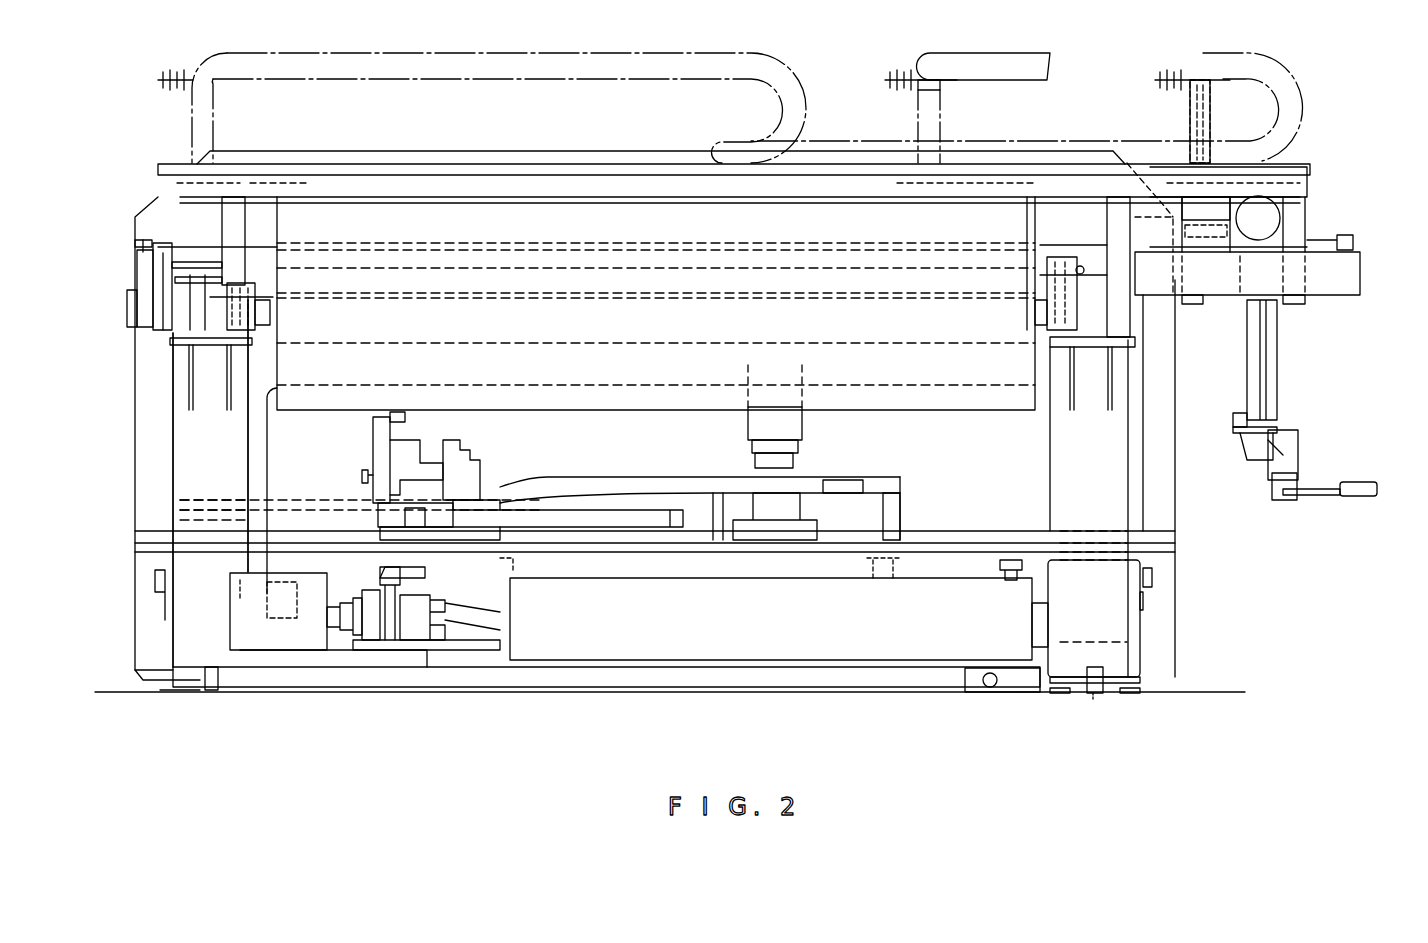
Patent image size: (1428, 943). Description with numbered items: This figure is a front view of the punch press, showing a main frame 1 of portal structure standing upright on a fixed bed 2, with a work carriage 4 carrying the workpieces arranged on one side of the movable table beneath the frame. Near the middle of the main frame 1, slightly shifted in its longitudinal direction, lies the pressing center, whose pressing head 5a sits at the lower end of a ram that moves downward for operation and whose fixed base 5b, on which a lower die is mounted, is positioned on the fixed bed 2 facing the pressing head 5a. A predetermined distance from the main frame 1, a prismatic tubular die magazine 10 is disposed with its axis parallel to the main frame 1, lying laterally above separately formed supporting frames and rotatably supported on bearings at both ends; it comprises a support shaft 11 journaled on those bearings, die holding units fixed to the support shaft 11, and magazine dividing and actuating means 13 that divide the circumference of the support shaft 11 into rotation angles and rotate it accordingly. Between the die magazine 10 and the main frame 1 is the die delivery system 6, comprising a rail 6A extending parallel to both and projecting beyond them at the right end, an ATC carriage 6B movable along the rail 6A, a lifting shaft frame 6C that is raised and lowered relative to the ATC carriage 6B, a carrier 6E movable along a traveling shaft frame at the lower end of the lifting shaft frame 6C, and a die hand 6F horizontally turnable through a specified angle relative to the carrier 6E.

The main frame 1 is at (1167, 500).
The fixed bed 2 is at (1167, 623).
The work carriage 4 is at (417, 457).
The pressing head 5a is at (757, 458).
The fixed base 5b is at (785, 507).
The die delivery system 6 is at (1272, 324).
The rail 6A is at (1147, 280).
The ATC carriage 6B is at (1275, 221).
The lifting shaft frame 6C is at (1278, 360).
The carrier 6E is at (1280, 462).
The die hand 6F is at (1330, 477).
The die magazine 10 is at (818, 216).
The support shaft 11 is at (572, 303).
The magazine dividing and actuating means 13 is at (170, 283).